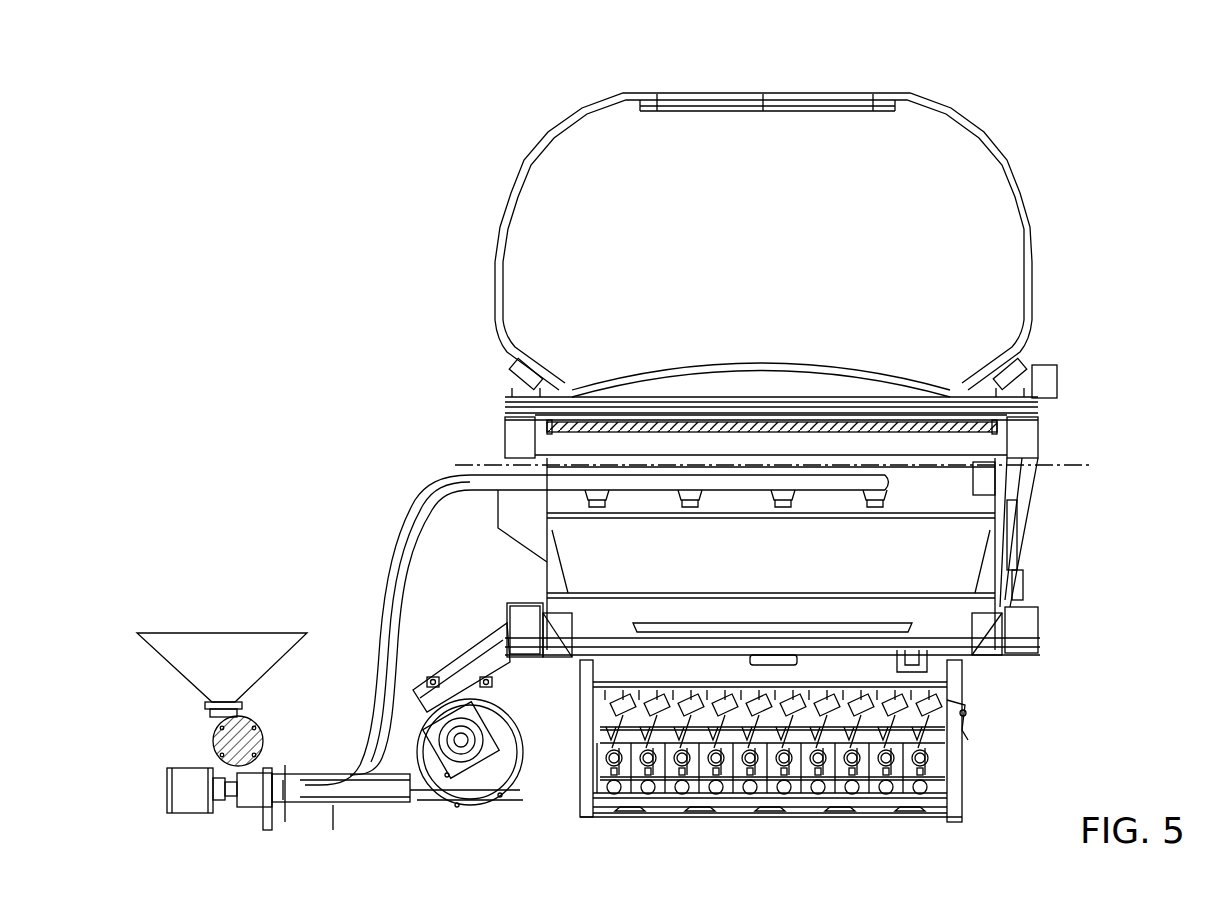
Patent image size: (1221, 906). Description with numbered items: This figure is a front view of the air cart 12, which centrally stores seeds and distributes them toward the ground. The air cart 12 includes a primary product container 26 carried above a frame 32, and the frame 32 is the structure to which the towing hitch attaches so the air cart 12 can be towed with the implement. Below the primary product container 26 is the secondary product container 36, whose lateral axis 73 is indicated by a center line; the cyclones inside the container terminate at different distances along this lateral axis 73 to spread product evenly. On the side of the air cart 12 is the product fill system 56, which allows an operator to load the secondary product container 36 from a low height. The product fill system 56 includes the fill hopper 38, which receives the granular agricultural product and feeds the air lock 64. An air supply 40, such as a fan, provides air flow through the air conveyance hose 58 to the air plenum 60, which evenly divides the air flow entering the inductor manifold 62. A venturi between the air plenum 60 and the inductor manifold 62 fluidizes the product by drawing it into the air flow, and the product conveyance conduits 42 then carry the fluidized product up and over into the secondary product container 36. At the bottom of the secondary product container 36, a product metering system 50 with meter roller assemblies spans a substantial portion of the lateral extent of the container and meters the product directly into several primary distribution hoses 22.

The air cart 12 is at (663, 86).
The primary product container 26 is at (1000, 142).
The frame 32 is at (550, 440).
The lateral axis 73 is at (1068, 465).
The product conveyance conduits 42 is at (403, 530).
The product fill system 56 is at (326, 521).
The secondary product container 36 is at (962, 562).
The fill hopper 38 is at (222, 633).
The air lock 64 is at (230, 745).
The air plenum 60 is at (187, 795).
The inductor manifold 62 is at (255, 797).
The air conveyance hose 58 is at (310, 808).
The air supply 40 is at (462, 790).
The product metering system 50 is at (955, 705).
The primary distribution hoses 22 is at (945, 787).